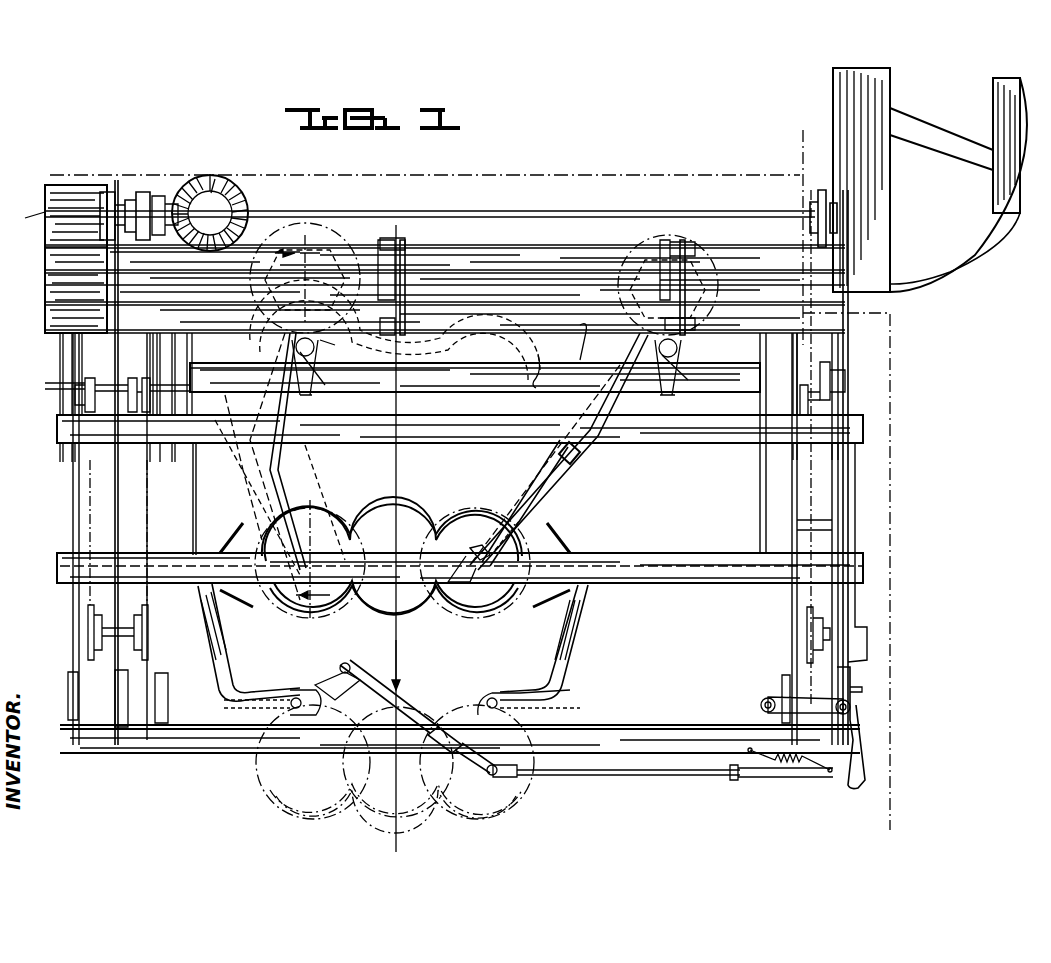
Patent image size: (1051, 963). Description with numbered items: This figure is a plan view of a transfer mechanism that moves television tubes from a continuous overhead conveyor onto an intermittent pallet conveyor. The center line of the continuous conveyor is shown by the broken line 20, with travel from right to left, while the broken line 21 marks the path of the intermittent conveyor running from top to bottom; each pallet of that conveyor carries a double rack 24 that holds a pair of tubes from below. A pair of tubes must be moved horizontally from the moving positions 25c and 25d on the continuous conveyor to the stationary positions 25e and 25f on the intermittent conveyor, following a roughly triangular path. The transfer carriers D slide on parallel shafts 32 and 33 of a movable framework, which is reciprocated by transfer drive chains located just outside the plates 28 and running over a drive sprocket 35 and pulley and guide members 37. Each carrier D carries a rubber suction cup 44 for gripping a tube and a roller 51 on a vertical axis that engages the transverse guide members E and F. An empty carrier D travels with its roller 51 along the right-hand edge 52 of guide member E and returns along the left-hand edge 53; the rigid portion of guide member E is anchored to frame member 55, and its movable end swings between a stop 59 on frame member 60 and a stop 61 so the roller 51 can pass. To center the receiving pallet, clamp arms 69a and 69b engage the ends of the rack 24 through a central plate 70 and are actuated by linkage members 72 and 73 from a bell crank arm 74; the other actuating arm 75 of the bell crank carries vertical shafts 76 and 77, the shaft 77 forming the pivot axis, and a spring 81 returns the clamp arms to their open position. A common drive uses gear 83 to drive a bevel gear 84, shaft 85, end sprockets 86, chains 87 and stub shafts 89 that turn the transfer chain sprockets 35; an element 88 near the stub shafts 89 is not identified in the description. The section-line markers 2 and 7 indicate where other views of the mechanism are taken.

The section line 2- 2 is at (830, 137).
The direction of viewing arrow 7 is at (300, 419).
The broken line 20 is at (58, 280).
The broken line 21 is at (430, 665).
The double rack 24 is at (412, 396).
The moving position 25c is at (650, 245).
The moving position 25d is at (320, 230).
The stationary position 25e is at (468, 512).
The stationary position 25f is at (340, 525).
The plates 28 is at (190, 540).
The shaft 32 is at (538, 362).
The shaft 33 is at (594, 342).
The drive sprocket 35 is at (176, 368).
The pulley and guide member 37 is at (88, 640).
The rubber suction cup 44 is at (378, 255).
The roller 51 is at (295, 347).
The right-hand edge 52 is at (545, 490).
The left-hand edge 53 is at (318, 485).
The frame member 55 is at (705, 388).
The stop 59 is at (465, 555).
The frame member 60 is at (635, 565).
The stop 61 is at (523, 528).
The clamp arm 69a is at (228, 672).
The clamp arm 69b is at (588, 632).
The central plate 70 is at (348, 615).
The linkage member 72 is at (405, 702).
The linkage member 73 is at (700, 775).
The bell crank arm 74 is at (848, 760).
The actuating arm 75 is at (778, 700).
The vertical shaft 76 is at (761, 706).
The vertical shaft 77 is at (850, 706).
The spring 81 is at (795, 775).
The gear 83 is at (248, 200).
The bevel gear 84 is at (170, 196).
The shaft 85 is at (463, 215).
The end sprocket 86 is at (818, 205).
The chain 87 is at (125, 328).
The collar 88 is at (108, 380).
The stub shaft 89 is at (140, 388).
The transfer carrier D is at (712, 350).
The transverse guide member E is at (545, 465).
The transverse guide member F is at (275, 466).